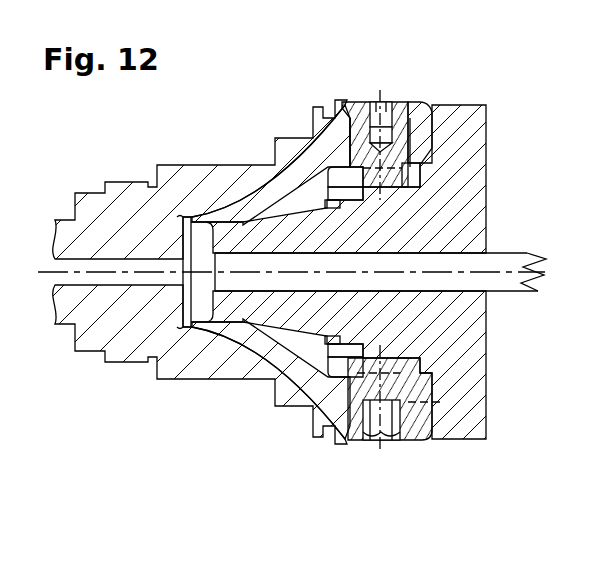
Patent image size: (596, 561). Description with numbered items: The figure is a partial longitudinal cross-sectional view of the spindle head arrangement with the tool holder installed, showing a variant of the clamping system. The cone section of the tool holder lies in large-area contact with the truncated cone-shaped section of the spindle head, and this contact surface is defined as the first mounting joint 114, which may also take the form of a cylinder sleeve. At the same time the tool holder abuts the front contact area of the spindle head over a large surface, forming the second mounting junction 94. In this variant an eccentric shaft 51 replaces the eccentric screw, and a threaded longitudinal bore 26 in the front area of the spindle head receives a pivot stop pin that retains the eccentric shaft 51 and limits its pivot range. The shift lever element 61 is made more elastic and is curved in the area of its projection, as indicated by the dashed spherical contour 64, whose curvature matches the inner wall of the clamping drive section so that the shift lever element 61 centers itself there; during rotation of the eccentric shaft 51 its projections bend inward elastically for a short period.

The shift lever element 61 is at (347, 175).
The spherical contour 64 is at (390, 167).
The second mounting junction 94 is at (433, 143).
The first mounting joint 114 is at (287, 332).
The eccentric shaft 51 is at (369, 447).
The threaded longitudinal bore 26 is at (415, 413).